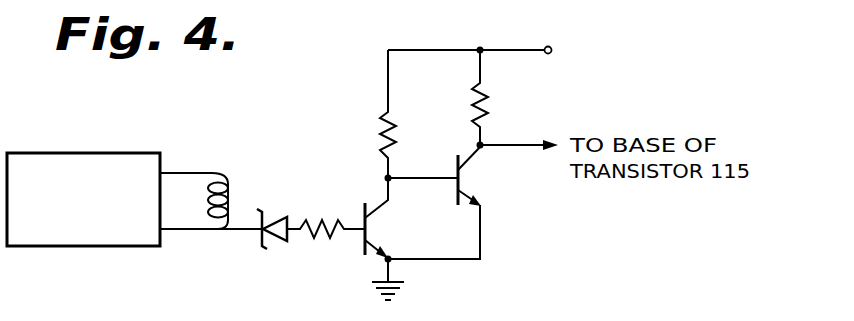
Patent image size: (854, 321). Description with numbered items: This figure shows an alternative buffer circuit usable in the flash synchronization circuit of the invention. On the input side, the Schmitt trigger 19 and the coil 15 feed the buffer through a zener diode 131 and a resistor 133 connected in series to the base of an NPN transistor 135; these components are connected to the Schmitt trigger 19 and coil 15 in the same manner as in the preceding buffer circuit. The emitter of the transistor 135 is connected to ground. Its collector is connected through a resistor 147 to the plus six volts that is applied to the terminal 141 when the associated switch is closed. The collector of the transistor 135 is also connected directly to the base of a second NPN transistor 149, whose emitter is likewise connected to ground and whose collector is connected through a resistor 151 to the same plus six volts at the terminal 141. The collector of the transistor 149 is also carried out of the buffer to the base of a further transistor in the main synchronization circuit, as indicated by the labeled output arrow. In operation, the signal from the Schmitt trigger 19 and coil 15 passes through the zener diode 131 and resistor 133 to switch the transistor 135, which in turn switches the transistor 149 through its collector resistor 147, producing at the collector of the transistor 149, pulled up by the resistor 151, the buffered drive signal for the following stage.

The Schmitt trigger 19 is at (86, 153).
The coil 15 is at (227, 183).
The zener diode 131 is at (266, 249).
The resistor 133 is at (310, 242).
The NPN transistor 135 is at (365, 203).
The resistor 147 is at (380, 126).
The NPN transistor 149 is at (456, 193).
The resistor 151 is at (483, 112).
The terminal 141 is at (552, 51).